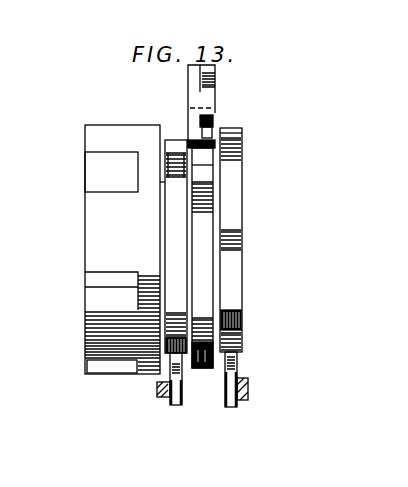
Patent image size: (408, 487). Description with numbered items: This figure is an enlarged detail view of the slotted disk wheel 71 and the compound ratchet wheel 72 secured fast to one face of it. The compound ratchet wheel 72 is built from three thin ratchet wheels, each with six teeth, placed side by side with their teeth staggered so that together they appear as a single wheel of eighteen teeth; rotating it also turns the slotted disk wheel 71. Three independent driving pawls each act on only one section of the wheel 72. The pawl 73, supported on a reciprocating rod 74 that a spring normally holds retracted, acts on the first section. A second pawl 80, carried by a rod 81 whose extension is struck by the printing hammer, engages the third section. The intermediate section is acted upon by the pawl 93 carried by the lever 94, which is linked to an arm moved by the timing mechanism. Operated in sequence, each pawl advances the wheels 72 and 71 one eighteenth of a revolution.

The slotted disk wheel 71 is at (99, 170).
The compound ratchet wheel 72 is at (220, 262).
The pawl 73 is at (233, 407).
The reciprocating rod 74 is at (248, 382).
The second pawl 80 is at (181, 372).
The rod 81 is at (160, 403).
The pawl 93 is at (214, 127).
The lever 94 is at (197, 87).